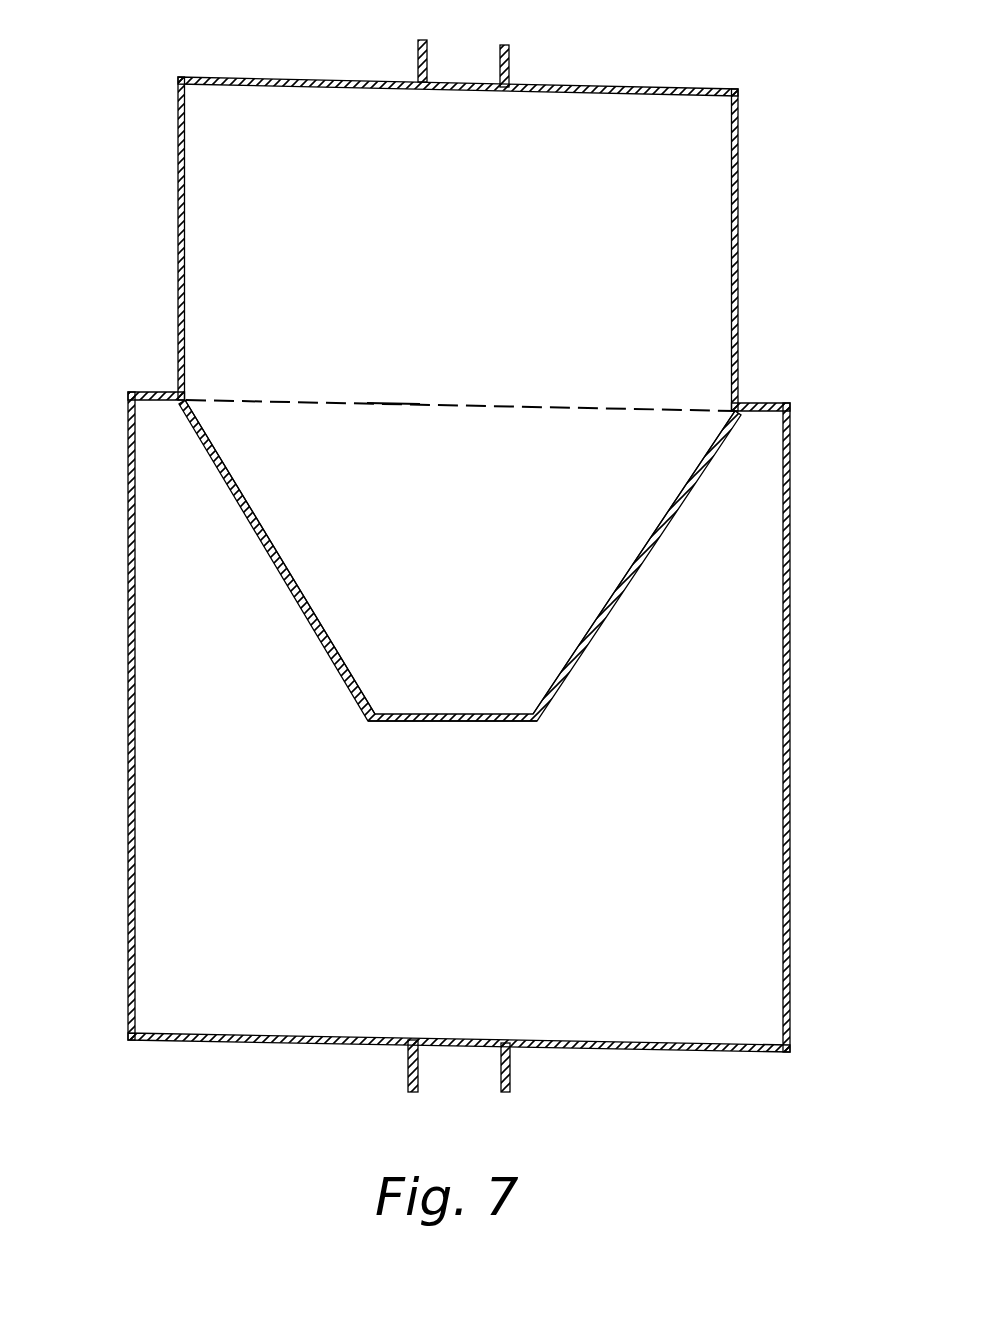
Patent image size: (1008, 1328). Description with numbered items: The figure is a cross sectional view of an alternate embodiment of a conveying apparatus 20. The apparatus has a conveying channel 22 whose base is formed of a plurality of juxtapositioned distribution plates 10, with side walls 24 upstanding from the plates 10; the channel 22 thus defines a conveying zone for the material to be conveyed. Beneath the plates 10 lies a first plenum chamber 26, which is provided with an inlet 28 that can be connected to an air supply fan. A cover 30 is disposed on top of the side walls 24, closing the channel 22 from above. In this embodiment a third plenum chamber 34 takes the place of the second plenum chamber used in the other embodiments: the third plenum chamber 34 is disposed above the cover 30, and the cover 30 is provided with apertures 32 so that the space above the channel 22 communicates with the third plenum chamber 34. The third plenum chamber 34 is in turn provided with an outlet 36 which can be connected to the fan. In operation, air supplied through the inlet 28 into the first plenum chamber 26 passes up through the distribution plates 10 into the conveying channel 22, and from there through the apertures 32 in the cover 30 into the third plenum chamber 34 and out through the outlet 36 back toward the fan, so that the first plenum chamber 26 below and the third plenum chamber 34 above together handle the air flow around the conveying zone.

The distribution plates 10 is at (478, 723).
The conveying apparatus 20 is at (788, 327).
The conveying channel 22 is at (340, 553).
The side walls 24 is at (328, 650).
The first plenum chamber 26 is at (178, 865).
The inlet 28 is at (510, 1078).
The cover 30 is at (318, 400).
The apertures 32 is at (367, 403).
The third plenum chamber 34 is at (648, 210).
The outlet 36 is at (509, 65).